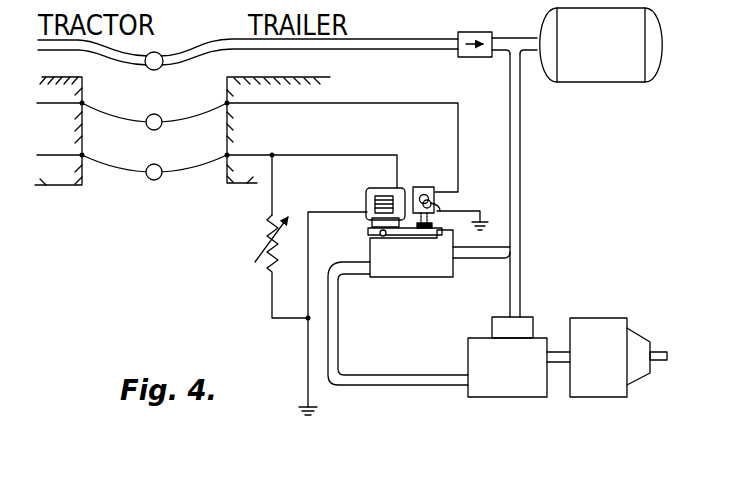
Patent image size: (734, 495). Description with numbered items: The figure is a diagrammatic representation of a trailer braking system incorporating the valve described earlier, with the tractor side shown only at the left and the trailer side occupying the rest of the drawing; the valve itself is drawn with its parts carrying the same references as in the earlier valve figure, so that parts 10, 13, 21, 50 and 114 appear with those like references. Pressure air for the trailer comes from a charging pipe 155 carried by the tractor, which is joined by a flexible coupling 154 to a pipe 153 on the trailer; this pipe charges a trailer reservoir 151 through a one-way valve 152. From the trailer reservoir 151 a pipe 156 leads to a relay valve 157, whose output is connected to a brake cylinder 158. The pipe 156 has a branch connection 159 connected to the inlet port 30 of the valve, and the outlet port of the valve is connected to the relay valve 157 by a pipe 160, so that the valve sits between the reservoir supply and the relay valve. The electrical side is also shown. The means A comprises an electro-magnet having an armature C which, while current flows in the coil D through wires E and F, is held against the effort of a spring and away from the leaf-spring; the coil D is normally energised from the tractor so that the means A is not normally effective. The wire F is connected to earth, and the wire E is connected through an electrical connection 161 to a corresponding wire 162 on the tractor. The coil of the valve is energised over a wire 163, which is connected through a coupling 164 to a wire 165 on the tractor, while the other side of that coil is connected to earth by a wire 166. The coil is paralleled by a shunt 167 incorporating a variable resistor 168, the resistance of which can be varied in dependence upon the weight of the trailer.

The housing of control device 10 is at (375, 277).
The pivot 13 is at (379, 236).
The solenoid coil 21 is at (398, 184).
The inlet port 30 is at (455, 243).
The control valve unit 50 is at (407, 229).
The armature bar 114 is at (410, 235).
The trailer reservoir 151 is at (602, 82).
The one-way valve 152 is at (480, 33).
The pipe 153 is at (398, 38).
The flexible coupling 154 is at (125, 63).
The charging pipe 155 is at (78, 52).
The pipe 156 is at (520, 116).
The relay valve 157 is at (537, 327).
The brake cylinder 158 is at (611, 389).
The branch connection 159 is at (485, 259).
The pipe 160 is at (423, 383).
The electrical connection 161 is at (125, 119).
The wire 162 is at (58, 104).
The wire 163 is at (304, 154).
The coupling 164 is at (123, 173).
The wire 165 is at (55, 158).
The wire 166 is at (308, 340).
The shunt 167 is at (267, 190).
The variable resistor 168 is at (267, 237).
The means A is at (425, 184).
The armature C is at (428, 233).
The coil D is at (434, 211).
The wire E is at (458, 160).
The wire F is at (462, 210).